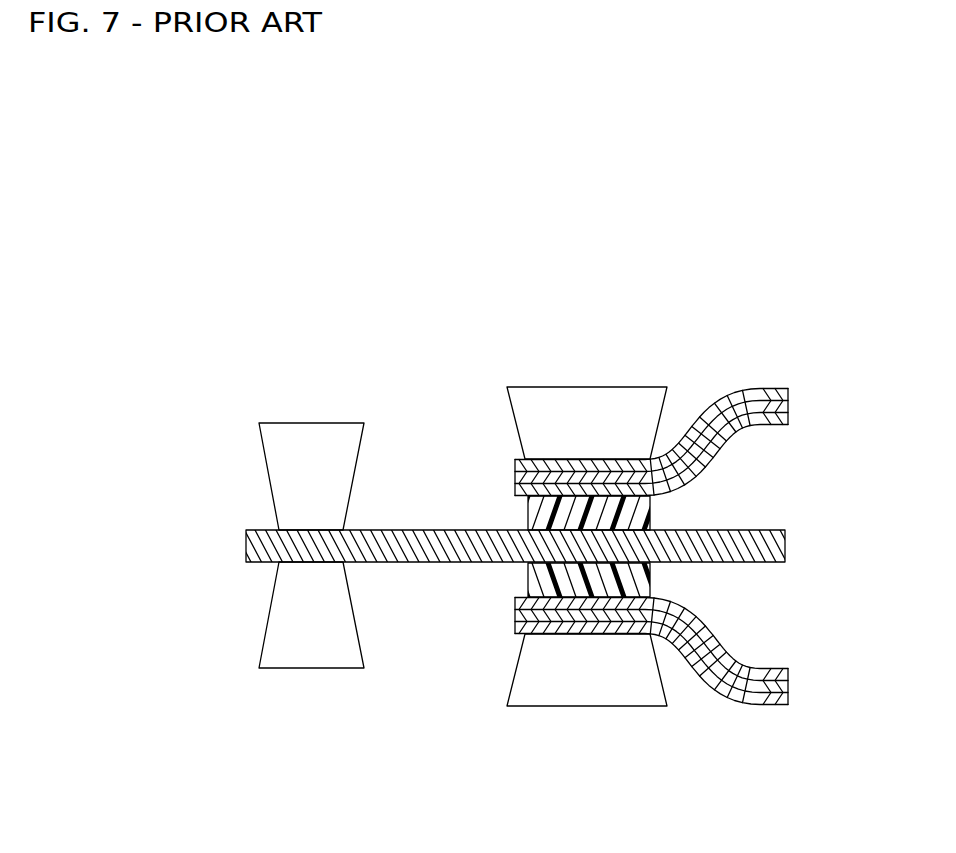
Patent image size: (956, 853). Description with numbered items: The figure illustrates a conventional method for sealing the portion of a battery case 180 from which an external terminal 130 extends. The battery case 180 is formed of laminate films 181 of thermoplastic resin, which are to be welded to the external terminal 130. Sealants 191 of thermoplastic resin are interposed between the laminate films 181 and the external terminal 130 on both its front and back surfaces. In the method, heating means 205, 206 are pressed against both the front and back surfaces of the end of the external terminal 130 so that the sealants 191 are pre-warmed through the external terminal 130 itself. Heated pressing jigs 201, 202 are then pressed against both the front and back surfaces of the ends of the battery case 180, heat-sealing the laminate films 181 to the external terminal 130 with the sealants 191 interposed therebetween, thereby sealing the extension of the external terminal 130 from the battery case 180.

The external terminal 130 is at (417, 530).
The battery case 180 is at (752, 359).
The laminate film 181 is at (763, 388).
The sealant 191 is at (650, 512).
The heated pressing jig 201 is at (596, 387).
The heated pressing jig 202 is at (590, 706).
The heating means 205 is at (267, 467).
The heating means 206 is at (267, 625).